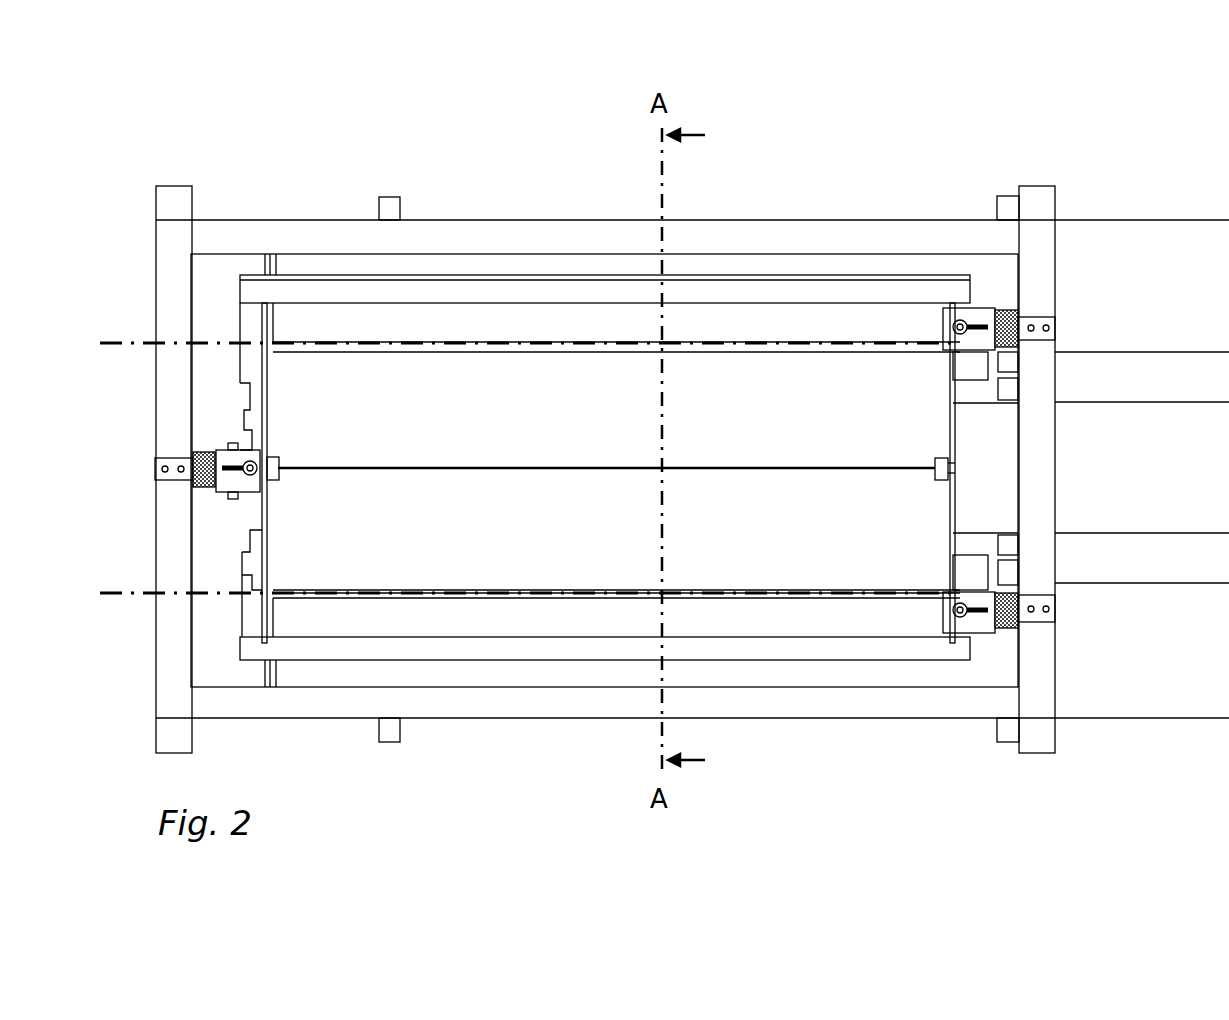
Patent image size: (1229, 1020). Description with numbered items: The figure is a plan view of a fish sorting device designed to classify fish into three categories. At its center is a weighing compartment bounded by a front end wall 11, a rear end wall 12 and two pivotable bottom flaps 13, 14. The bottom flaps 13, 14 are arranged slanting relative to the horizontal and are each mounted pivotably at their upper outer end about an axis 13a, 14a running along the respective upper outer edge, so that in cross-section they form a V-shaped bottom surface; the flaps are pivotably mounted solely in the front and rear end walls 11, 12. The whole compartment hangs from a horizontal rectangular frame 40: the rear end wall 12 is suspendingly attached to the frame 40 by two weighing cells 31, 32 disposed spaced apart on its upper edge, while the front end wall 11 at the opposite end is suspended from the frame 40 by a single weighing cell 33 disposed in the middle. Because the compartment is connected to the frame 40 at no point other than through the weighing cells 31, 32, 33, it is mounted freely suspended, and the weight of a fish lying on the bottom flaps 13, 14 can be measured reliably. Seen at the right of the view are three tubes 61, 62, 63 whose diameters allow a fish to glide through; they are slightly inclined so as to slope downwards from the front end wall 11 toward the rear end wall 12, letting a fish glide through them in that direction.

The front end wall 11 is at (267, 527).
The rear end wall 12 is at (950, 510).
The bottom flap 13 is at (572, 432).
The axis 13a is at (121, 340).
The bottom flap 14 is at (572, 549).
The axis 14a is at (140, 592).
The weighing cell 31 is at (1005, 320).
The weighing cell 32 is at (1013, 620).
The weighing cell 33 is at (206, 450).
The frame 40 is at (424, 232).
The tube 61 is at (1185, 306).
The tube 62 is at (1185, 490).
The tube 63 is at (1185, 667).